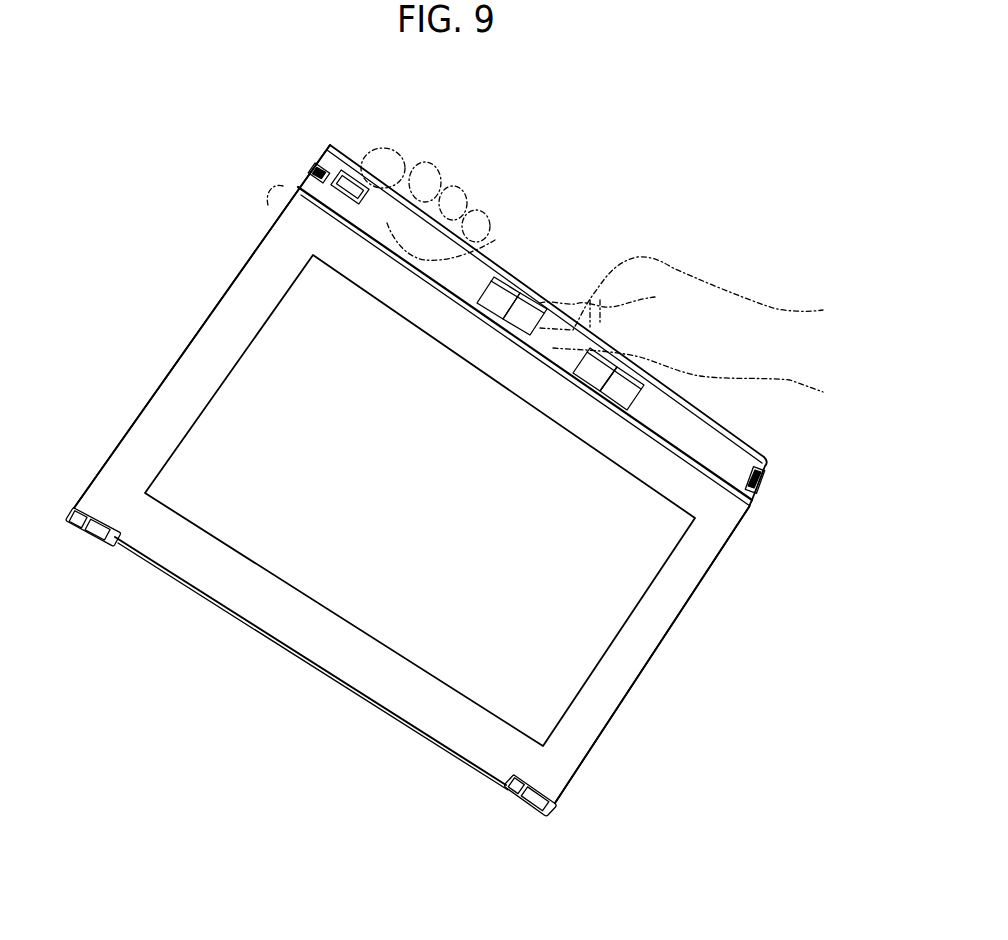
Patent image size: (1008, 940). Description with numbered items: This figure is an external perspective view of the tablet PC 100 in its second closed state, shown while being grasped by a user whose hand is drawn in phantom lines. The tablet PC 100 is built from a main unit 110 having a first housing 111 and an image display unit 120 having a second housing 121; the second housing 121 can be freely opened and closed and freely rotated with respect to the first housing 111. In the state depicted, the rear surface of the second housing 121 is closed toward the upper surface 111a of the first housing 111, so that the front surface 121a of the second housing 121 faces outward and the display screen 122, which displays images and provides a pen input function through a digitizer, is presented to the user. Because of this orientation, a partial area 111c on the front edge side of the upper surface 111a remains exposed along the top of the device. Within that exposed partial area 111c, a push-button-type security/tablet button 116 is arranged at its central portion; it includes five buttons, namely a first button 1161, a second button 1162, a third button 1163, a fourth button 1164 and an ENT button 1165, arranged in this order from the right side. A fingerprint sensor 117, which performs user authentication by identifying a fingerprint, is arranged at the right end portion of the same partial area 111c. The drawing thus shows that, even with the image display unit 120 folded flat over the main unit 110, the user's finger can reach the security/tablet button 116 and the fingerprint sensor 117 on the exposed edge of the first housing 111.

The tablet PC 100 is at (162, 262).
The main unit 110 is at (372, 213).
The first housing 111 is at (378, 220).
The upper surface 111a is at (475, 278).
The partial area 111c is at (717, 469).
The security/tablet button 116 is at (537, 495).
The first button 1161 is at (490, 303).
The second button 1162 is at (517, 330).
The third button 1163 is at (553, 361).
The fourth button 1164 is at (585, 388).
The ENT button 1165 is at (630, 407).
The fingerprint sensor 117 is at (340, 194).
The image display unit 120 is at (645, 633).
The second housing 121 is at (625, 676).
The front surface 121a is at (594, 716).
The display screen 122 is at (633, 566).